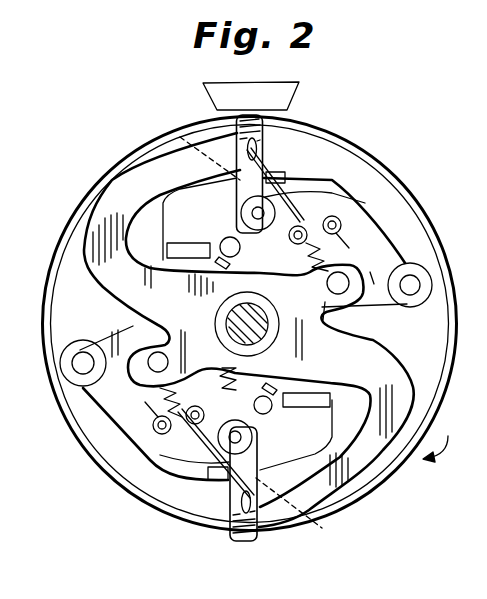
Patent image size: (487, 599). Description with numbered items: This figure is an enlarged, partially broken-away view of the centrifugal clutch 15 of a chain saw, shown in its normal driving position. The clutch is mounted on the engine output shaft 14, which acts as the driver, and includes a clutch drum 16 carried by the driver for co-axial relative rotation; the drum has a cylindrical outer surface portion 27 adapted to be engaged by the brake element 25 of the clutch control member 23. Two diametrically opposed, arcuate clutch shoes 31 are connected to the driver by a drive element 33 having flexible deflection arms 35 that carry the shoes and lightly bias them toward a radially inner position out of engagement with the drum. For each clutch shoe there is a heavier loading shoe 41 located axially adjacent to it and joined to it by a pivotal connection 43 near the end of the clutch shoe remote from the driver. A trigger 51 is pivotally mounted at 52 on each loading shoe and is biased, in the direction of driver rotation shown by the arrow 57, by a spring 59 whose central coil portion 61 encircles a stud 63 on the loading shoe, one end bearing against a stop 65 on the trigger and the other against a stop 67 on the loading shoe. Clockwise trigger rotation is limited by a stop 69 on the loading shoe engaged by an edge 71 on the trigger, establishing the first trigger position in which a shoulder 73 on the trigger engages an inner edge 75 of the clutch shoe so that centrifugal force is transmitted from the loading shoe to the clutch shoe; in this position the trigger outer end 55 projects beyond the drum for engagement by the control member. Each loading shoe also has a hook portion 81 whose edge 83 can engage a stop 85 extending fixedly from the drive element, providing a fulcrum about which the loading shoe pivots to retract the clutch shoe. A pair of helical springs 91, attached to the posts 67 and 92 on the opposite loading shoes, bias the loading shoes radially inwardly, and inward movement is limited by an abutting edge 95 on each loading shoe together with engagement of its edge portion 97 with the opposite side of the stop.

The output shaft 14 is at (252, 330).
The centrifugal clutch 15 is at (377, 121).
The clutch drum 16 is at (391, 188).
The clutch control member 23 is at (260, 83).
The brake element 25 is at (274, 114).
The cylindrical outer surface portion 27 is at (420, 236).
The clutch shoe 31 is at (361, 170).
The drive element 33 is at (182, 280).
The deflection arm 35 is at (128, 195).
The loading shoe 41 is at (220, 207).
The pivotal connection 43 is at (80, 358).
The trigger 51 is at (236, 130).
The pivotal mounting 52 is at (276, 212).
The trigger outer end 55 is at (236, 113).
The arrow 57 is at (434, 460).
The spring 59 is at (342, 181).
The central coil portion 61 is at (289, 241).
The stud 63 is at (355, 206).
The stop 65 is at (277, 117).
The stop 67 is at (342, 224).
The stop 69 is at (286, 176).
The edge 71 is at (272, 144).
The shoulder 73 is at (180, 137).
The inner edge 75 is at (172, 183).
The hook portion 81 is at (118, 330).
The edge 83 is at (157, 350).
The stop 85 is at (152, 378).
The helical spring 91 is at (258, 383).
The post 92 is at (223, 240).
The abutting edge 95 is at (327, 402).
The edge portion 97 is at (354, 268).